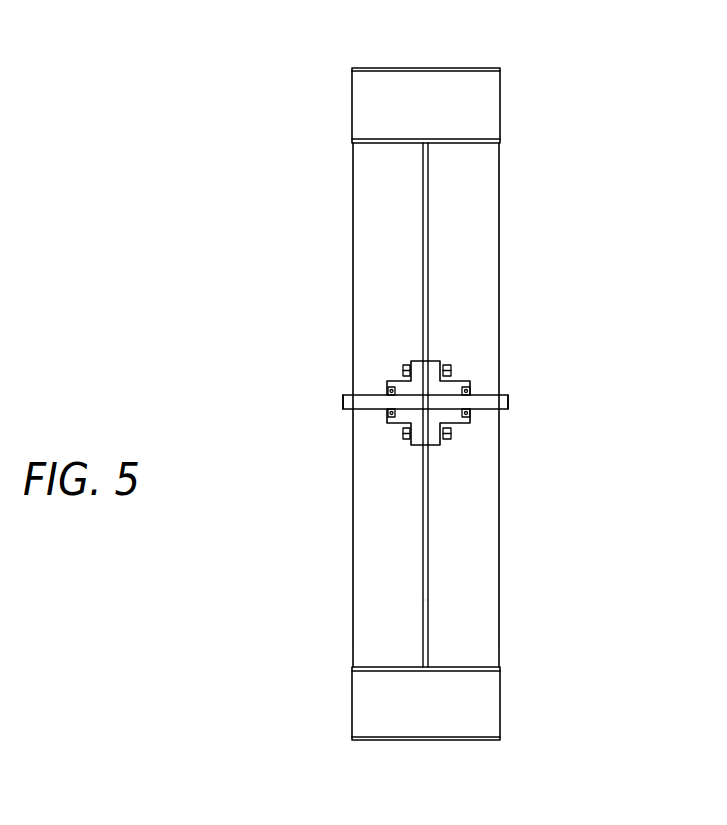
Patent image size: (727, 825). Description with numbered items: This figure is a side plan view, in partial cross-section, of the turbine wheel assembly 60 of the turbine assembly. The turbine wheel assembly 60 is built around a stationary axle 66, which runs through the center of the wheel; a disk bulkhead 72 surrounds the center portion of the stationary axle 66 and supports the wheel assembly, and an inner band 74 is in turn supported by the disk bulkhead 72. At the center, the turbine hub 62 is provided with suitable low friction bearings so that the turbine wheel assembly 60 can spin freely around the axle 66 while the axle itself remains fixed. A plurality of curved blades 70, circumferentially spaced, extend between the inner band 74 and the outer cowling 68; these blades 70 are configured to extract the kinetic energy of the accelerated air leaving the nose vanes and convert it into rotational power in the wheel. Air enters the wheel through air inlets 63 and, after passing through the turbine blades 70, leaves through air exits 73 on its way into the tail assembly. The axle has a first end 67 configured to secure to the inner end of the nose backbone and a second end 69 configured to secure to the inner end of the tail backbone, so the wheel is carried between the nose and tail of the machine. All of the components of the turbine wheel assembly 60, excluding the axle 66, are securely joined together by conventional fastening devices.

The turbine wheel assembly 60 is at (245, 250).
The turbine hub 62 is at (393, 431).
The air inlets 63 is at (350, 100).
The stationary axle 66 is at (486, 395).
The first end of the axle 67 is at (343, 402).
The outer cowling 68 is at (398, 68).
The second end of the turbine axle 69 is at (508, 402).
The curved blades 70 is at (460, 112).
The disk bulkhead 72 is at (425, 278).
The air exits 73 is at (510, 115).
The inner band 74 is at (384, 667).